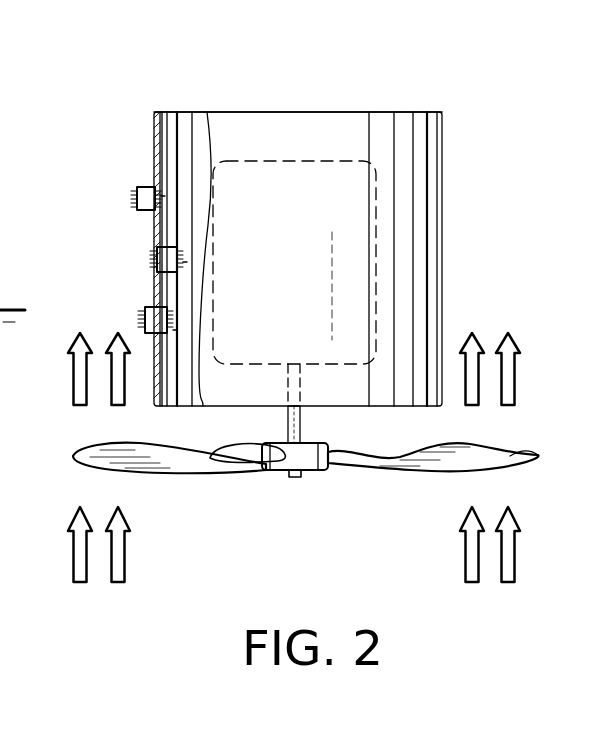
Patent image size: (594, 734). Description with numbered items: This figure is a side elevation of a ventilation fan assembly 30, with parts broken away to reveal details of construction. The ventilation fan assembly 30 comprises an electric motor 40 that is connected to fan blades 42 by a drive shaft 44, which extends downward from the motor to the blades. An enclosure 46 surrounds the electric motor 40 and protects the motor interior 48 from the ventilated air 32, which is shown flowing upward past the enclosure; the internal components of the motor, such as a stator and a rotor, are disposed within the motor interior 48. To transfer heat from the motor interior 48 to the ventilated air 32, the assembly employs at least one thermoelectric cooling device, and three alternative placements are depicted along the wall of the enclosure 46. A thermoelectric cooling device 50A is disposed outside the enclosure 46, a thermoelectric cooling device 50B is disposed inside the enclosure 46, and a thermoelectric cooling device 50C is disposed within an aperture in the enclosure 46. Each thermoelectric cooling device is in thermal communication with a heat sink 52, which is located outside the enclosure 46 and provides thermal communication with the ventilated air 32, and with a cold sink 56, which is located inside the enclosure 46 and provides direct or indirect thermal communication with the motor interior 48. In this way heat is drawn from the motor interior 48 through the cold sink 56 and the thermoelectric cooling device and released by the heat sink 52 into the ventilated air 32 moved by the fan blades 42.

The ventilation fan assembly 30 is at (503, 108).
The ventilated air 32 is at (516, 381).
The electric motor 40 is at (375, 237).
The fan blades 42 is at (525, 452).
The drive shaft 44 is at (302, 432).
The enclosure 46 is at (377, 112).
The motor interior 48 is at (350, 300).
The thermoelectric cooling device 50A is at (145, 187).
The thermoelectric cooling device 50B is at (158, 247).
The thermoelectric cooling device 50C is at (147, 307).
The heat sink 52 is at (131, 200).
The cold sink 56 is at (162, 197).